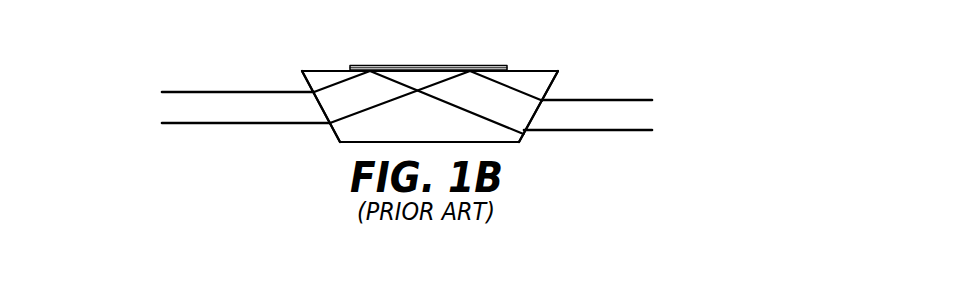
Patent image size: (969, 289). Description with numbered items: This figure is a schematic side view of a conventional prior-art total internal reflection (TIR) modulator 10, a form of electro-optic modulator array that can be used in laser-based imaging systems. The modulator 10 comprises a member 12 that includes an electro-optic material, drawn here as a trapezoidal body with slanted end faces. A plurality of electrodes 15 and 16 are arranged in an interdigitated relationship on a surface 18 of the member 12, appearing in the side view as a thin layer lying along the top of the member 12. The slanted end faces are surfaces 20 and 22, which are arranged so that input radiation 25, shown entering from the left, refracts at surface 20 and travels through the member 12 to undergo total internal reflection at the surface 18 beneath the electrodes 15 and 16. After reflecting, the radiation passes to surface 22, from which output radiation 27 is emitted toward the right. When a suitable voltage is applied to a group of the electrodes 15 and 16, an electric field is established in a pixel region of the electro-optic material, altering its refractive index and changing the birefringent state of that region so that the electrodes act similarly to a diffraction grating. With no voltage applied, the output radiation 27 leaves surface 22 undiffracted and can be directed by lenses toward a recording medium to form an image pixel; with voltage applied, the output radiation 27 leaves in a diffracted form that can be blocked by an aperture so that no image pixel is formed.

The TIR modulator 10 is at (655, 34).
The member 12 is at (558, 74).
The electrode 15 is at (388, 65).
The electrode 16 is at (428, 68).
The surface 18 is at (537, 63).
The surface 20 is at (336, 137).
The surface 22 is at (523, 137).
The input radiation 25 is at (244, 109).
The output radiation 27 is at (617, 117).